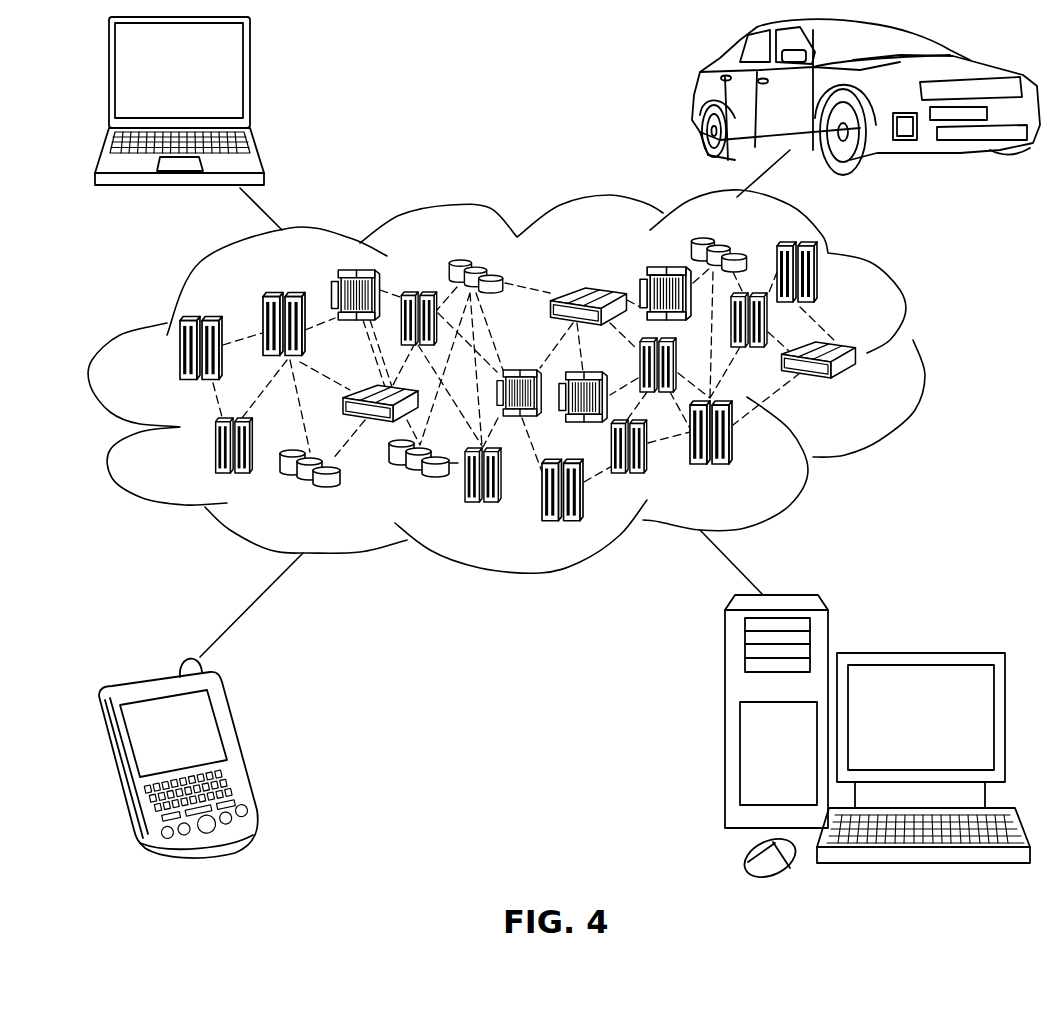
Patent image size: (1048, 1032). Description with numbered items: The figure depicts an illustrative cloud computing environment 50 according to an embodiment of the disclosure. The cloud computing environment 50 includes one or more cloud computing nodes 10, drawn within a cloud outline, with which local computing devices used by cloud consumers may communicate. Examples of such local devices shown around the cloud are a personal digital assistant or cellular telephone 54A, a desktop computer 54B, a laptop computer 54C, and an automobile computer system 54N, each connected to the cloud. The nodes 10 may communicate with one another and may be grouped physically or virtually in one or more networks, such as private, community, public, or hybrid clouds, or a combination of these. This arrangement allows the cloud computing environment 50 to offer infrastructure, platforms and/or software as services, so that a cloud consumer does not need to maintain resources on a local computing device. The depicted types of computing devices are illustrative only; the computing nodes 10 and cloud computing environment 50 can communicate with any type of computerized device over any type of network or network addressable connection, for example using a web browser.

The cloud computing node 10 is at (864, 391).
The cloud computing environment 50 is at (538, 381).
The personal digital assistant or cellular telephone 54A is at (238, 748).
The desktop computer 54B is at (918, 652).
The laptop computer 54C is at (250, 80).
The automobile computer system 54N is at (695, 97).